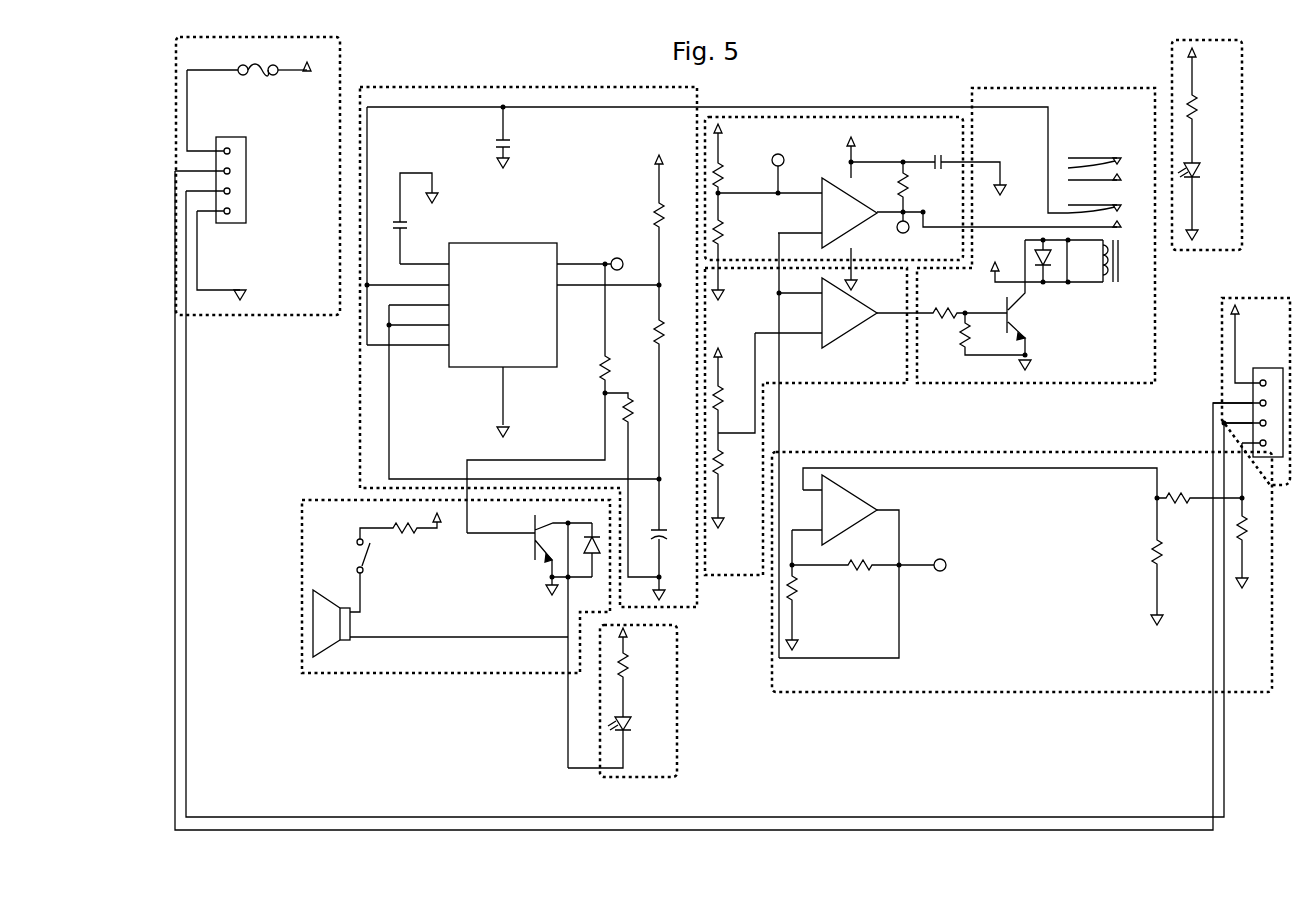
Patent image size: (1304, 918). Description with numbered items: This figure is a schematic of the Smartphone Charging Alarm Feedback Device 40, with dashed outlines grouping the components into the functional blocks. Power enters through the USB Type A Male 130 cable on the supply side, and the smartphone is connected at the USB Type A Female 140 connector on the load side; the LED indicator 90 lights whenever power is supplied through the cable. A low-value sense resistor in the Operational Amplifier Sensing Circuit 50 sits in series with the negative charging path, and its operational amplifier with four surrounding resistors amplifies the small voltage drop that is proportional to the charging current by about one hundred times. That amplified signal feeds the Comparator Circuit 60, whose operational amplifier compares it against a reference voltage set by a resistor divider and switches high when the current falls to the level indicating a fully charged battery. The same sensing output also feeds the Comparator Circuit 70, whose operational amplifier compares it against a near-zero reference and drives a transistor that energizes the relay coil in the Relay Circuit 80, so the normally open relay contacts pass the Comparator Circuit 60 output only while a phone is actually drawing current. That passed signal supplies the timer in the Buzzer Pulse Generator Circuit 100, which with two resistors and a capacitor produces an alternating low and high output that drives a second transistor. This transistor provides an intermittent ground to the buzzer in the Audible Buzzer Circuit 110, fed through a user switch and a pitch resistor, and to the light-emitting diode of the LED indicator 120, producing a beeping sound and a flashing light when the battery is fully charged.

The Smartphone Charging Alarm Feedback Device 40 is at (298, 747).
The Operational Amplifier Sensing Circuit 50 is at (965, 663).
The Comparator Circuit 60 is at (810, 138).
The Comparator Circuit 70 is at (858, 348).
The Relay Circuit 80 is at (955, 348).
The LED indicator 90 is at (1180, 92).
The Buzzer Pulse Generator Circuit 100 is at (380, 403).
The Audible Buzzer Circuit 110 is at (360, 655).
The LED indicator 120 is at (667, 703).
The USB Type A Male cable 130 is at (215, 297).
The USB Type A Female connector 140 is at (1222, 360).